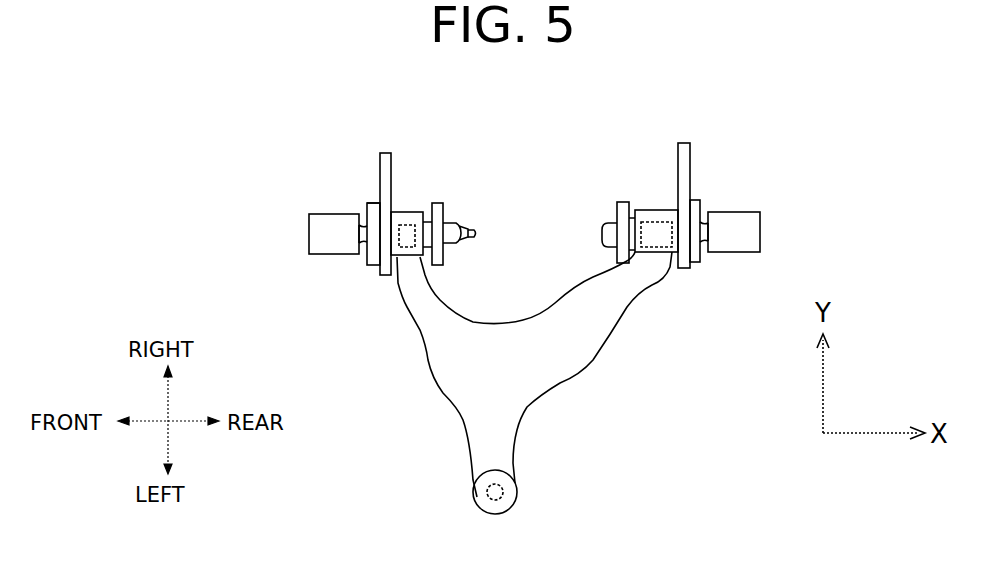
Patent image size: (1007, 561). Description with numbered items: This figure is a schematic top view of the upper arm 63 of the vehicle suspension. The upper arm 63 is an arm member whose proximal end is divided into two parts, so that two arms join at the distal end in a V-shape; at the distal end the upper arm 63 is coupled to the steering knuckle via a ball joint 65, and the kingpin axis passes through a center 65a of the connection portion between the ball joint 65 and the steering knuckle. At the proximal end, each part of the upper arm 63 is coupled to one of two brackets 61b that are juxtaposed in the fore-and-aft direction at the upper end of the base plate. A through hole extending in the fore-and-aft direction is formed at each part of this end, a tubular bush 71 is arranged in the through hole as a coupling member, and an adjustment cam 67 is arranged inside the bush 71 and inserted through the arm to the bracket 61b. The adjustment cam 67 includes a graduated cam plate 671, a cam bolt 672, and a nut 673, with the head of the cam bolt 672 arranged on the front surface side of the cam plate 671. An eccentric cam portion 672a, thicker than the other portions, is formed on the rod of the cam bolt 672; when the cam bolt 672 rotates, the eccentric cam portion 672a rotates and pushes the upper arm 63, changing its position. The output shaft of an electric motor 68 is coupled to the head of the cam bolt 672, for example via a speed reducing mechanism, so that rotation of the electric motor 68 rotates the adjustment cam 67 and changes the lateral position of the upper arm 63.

The bracket 61b is at (388, 173).
The upper arm 63 is at (447, 355).
The ball joint 65 is at (515, 513).
The center 65a is at (478, 506).
The adjustment cam 67 is at (367, 258).
The electric motor 68 is at (313, 234).
The bush 71 is at (426, 216).
The cam plate 671 is at (370, 203).
The cam bolt 672 is at (360, 228).
The eccentric cam portion 672a is at (393, 268).
The nut 673 is at (449, 243).